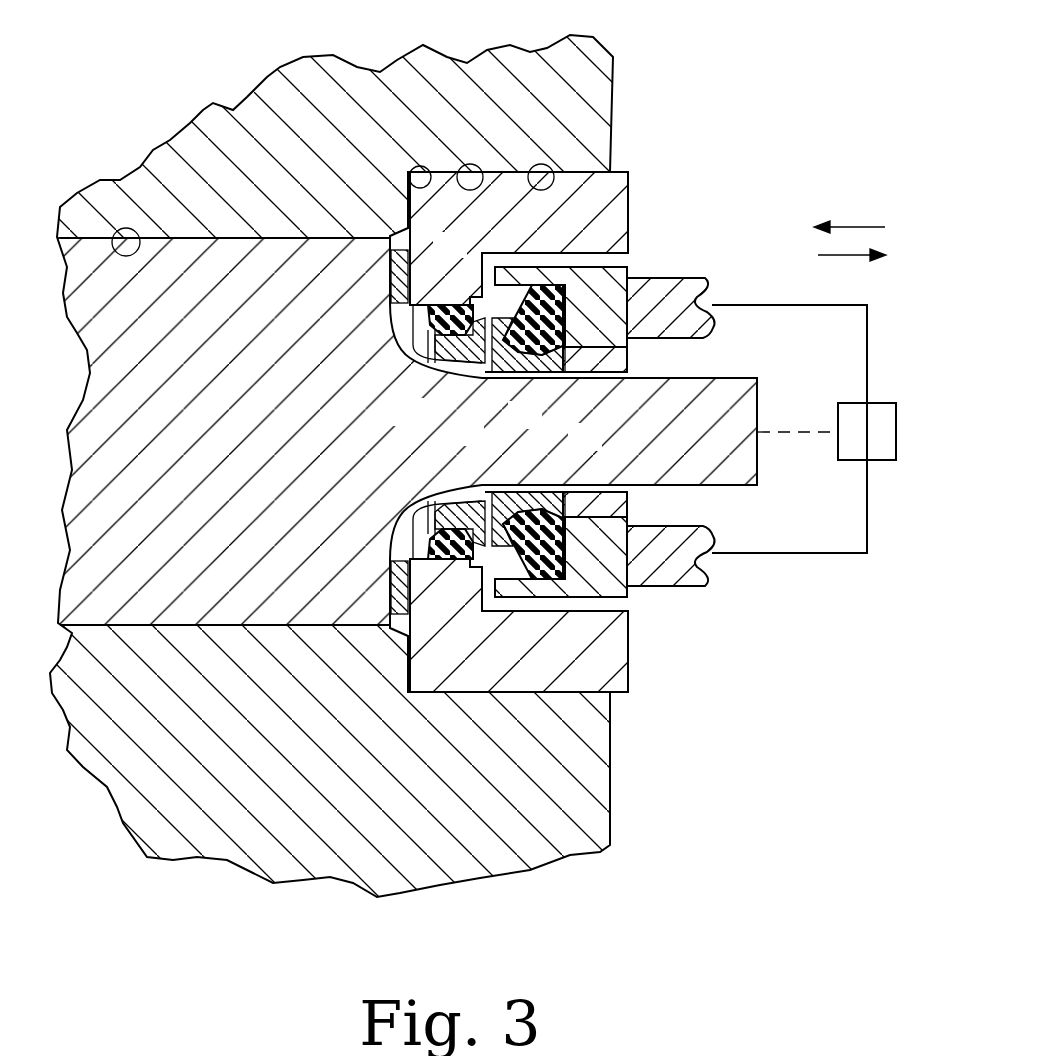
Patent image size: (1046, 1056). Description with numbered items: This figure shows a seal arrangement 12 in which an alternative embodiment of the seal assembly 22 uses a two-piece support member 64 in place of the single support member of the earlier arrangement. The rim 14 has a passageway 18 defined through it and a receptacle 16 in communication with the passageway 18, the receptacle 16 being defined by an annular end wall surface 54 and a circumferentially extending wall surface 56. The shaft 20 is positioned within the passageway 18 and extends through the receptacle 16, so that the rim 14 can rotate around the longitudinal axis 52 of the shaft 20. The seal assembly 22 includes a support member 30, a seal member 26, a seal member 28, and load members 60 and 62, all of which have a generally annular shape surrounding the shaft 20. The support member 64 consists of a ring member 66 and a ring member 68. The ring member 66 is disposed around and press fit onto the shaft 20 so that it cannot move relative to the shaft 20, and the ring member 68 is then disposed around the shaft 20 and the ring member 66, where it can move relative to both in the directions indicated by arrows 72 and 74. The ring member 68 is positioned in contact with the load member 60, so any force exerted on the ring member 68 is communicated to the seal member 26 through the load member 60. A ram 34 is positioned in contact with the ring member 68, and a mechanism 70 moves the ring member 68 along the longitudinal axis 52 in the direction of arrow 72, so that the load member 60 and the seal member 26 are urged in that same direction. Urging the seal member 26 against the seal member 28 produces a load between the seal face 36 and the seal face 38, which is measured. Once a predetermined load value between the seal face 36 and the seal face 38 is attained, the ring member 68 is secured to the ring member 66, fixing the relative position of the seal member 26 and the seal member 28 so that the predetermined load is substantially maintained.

The seal assembly 12 is at (511, 346).
The rim 14 is at (608, 62).
The receptacle 16 is at (470, 170).
The passageway 18 is at (128, 230).
The shaft 20 is at (740, 378).
The seal assembly 22 is at (761, 357).
The seal member 26 is at (548, 373).
The seal member 28 is at (445, 368).
The support member 30 is at (628, 173).
The ram 34 is at (705, 320).
The seal face 36 is at (492, 317).
The seal face 38 is at (468, 363).
The longitudinal axis 52 is at (805, 432).
The annular end wall surface 54 is at (420, 172).
The circumferentially extending wall surface 56 is at (540, 170).
The load member 60 is at (528, 360).
The load member 62 is at (455, 305).
The support member 64 is at (636, 262).
The ring member 66 is at (628, 357).
The ring member 68 is at (640, 272).
The mechanism 70 is at (852, 448).
The arrow 72 is at (862, 227).
The arrow 74 is at (838, 257).